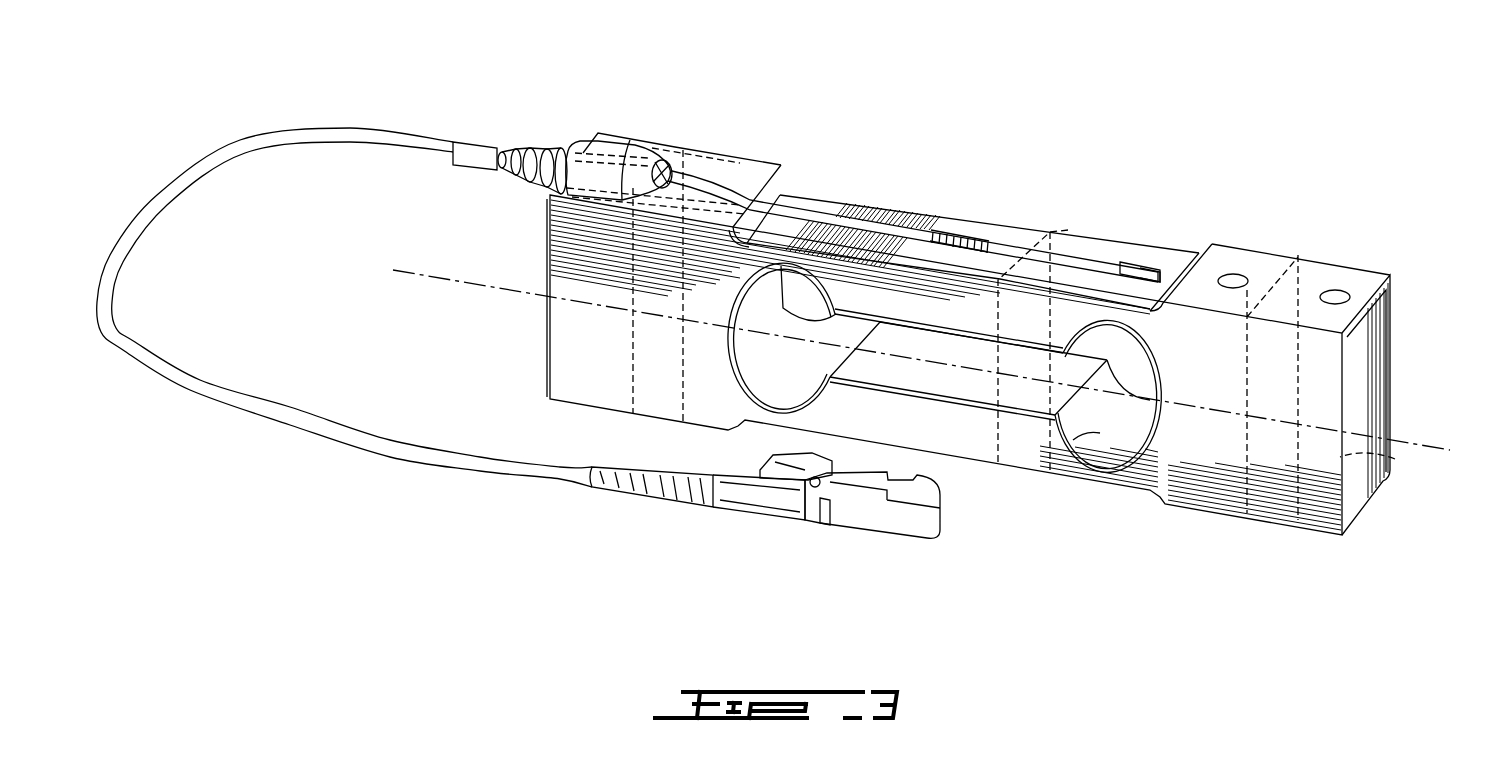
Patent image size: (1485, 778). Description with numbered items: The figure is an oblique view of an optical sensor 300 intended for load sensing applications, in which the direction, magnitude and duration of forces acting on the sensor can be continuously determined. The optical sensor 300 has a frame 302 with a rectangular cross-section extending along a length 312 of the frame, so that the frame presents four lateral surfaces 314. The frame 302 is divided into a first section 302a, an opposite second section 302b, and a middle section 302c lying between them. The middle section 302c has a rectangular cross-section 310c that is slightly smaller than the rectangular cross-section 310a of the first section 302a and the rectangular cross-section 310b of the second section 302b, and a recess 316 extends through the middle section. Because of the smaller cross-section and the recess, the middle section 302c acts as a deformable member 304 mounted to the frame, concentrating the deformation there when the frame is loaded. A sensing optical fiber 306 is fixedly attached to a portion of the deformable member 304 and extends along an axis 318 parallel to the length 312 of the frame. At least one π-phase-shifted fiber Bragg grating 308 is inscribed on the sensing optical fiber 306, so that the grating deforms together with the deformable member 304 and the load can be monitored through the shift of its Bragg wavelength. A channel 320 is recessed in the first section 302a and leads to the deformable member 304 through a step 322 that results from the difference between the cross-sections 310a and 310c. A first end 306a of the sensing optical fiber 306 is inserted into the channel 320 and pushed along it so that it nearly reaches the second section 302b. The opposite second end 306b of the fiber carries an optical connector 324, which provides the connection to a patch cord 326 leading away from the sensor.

The optical sensor 300 is at (1185, 74).
The frame 302 is at (1330, 260).
The first section 302a is at (735, 178).
The second section 302b is at (1367, 283).
The middle section 302c is at (905, 200).
The deformable member 304 is at (1190, 235).
The sensing optical fiber 306 is at (1010, 245).
The first end 306a is at (1118, 252).
The second end 306b is at (580, 147).
The π-phase-shifted fiber Bragg grating 308 is at (965, 228).
The rectangular cross-section 310a is at (683, 150).
The rectangular cross-section 310b is at (1395, 459).
The rectangular cross-section 310c is at (1068, 230).
The length 312 is at (1447, 449).
The lateral surfaces 314 is at (1274, 280).
The recess 316 is at (1080, 443).
The axis 318 is at (1153, 245).
The channel 320 is at (624, 147).
The step 322 is at (795, 178).
The optical connector 324 is at (547, 144).
The patch cord 326 is at (347, 127).